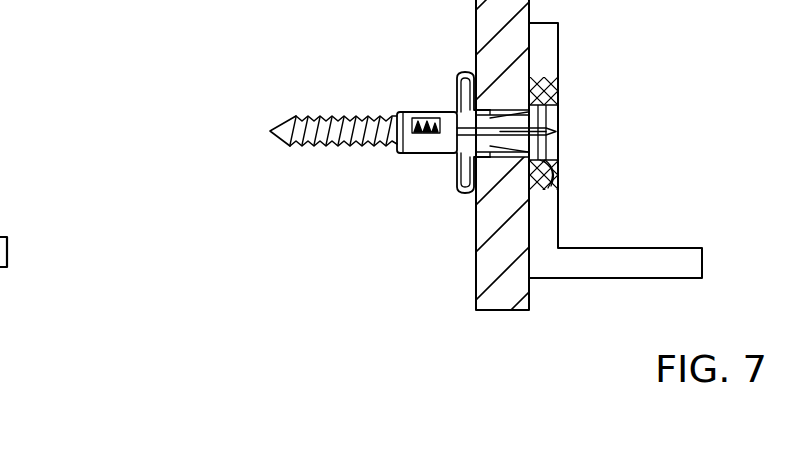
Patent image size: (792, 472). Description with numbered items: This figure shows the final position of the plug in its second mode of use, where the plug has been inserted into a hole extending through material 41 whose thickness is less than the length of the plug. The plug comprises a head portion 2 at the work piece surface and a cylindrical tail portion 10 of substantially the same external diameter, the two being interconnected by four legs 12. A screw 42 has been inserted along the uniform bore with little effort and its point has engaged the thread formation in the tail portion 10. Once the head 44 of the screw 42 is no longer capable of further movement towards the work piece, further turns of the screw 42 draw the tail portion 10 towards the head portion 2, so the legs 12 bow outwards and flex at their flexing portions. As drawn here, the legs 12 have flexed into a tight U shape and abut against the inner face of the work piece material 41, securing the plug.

The head portion 2 is at (508, 124).
The tail portion 10 is at (420, 143).
The legs 12 is at (463, 76).
The material 41 is at (496, 290).
The screw 42 is at (552, 138).
The head of the screw 44 is at (558, 182).